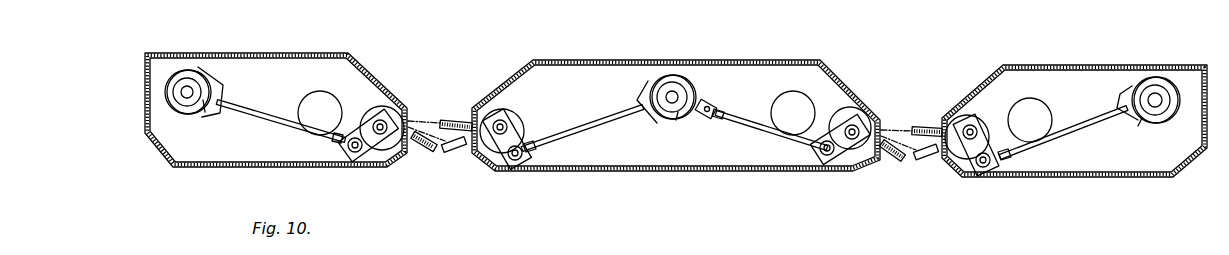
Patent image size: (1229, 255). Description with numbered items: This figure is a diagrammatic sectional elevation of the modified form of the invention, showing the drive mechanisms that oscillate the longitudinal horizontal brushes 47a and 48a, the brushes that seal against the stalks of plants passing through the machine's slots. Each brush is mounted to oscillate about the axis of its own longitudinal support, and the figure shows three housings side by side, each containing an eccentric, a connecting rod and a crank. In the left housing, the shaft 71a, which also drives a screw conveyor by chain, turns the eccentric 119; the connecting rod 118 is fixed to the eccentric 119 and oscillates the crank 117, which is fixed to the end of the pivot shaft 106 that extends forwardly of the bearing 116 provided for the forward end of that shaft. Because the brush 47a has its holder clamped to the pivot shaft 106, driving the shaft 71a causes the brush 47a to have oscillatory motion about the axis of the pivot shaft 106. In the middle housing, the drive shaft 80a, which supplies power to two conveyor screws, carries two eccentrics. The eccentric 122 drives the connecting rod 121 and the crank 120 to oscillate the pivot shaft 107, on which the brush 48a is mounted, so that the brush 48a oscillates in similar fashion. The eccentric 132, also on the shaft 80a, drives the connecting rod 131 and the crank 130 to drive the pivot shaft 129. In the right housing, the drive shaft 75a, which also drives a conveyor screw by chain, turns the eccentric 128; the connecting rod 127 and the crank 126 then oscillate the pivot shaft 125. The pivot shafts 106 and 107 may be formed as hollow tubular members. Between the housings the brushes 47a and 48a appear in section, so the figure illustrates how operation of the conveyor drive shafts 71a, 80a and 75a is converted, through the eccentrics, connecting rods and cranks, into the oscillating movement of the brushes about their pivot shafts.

The shaft 71a is at (195, 85).
The drive shaft 75a is at (1160, 95).
The drive shaft 80a is at (680, 90).
The longitudinal horizontal brush 47a is at (430, 152).
The longitudinal horizontal brush 48a is at (455, 127).
The pivot shaft 106 is at (393, 120).
The pivot shaft 107 is at (500, 125).
The bearing 116 is at (378, 102).
The crank 117 is at (380, 152).
The connecting rod 118 is at (271, 119).
The eccentric 119 is at (205, 112).
The crank 120 is at (512, 134).
The connecting rod 121 is at (595, 121).
The eccentric 122 is at (678, 112).
The pivot shaft 125 is at (975, 130).
The crank 126 is at (968, 156).
The connecting rod 127 is at (1073, 123).
The eccentric 128 is at (1138, 126).
The pivot shaft 129 is at (868, 124).
The crank 130 is at (848, 118).
The connecting rod 131 is at (740, 119).
The eccentric 132 is at (701, 113).